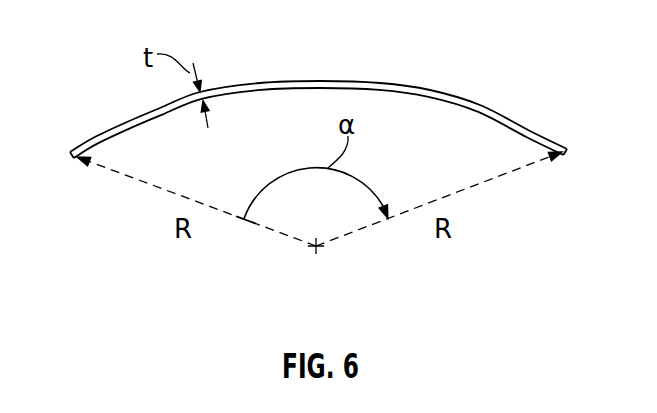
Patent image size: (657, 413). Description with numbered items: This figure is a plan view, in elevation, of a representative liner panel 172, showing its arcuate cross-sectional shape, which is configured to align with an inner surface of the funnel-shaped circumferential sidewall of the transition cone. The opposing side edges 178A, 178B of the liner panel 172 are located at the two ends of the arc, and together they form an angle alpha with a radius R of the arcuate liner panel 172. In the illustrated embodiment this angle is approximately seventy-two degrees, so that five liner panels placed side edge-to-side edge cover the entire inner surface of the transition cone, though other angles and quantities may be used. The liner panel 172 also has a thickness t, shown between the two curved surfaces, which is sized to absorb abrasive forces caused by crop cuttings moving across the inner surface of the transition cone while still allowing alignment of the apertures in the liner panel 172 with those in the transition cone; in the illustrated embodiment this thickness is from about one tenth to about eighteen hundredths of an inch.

The liner panel 172 is at (467, 97).
The side edge 178A is at (73, 158).
The side edge 178B is at (566, 153).